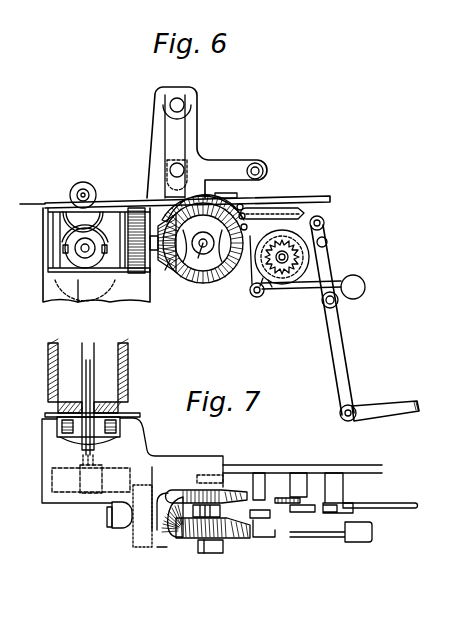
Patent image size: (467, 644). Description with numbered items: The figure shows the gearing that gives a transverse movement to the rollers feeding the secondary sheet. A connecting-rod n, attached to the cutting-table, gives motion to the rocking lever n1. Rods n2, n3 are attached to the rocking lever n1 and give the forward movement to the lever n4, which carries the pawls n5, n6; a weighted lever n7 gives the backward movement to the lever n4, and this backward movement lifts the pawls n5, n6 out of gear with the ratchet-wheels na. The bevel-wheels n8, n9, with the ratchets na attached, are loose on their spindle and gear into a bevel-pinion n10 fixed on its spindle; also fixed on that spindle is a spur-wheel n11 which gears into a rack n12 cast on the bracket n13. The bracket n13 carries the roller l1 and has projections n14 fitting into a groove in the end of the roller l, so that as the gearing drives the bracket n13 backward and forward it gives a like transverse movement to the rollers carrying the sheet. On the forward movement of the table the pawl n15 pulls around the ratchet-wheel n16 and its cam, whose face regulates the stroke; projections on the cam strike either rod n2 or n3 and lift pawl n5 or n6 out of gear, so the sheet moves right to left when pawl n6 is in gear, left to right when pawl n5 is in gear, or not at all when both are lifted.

In FIG. 6, the roller l is at (74, 290).
In FIG. 7, the roller l is at (92, 397).
In FIG. 6, the roller l1 is at (83, 192).
In FIG. 6, the connecting-rod n is at (397, 408).
In FIG. 7, the connecting-rod n is at (403, 508).
In FIG. 6, the rocking lever n1 is at (340, 362).
In FIG. 6, the rod n2 is at (268, 218).
In FIG. 6, the rod n3 is at (323, 220).
In FIG. 6, the lever n4 is at (250, 266).
In FIG. 7, the lever n4 is at (290, 507).
In FIG. 6, the pawl n5 is at (199, 194).
In FIG. 6, the pawl n6 is at (164, 240).
In FIG. 6, the weighted lever n7 is at (295, 290).
In FIG. 7, the weighted lever n7 is at (333, 537).
In FIG. 6, the bevel-wheel n8 is at (215, 278).
In FIG. 7, the bevel-wheel n8 is at (229, 488).
In FIG. 6, the bevel-wheel n9 is at (275, 287).
In FIG. 7, the bevel-wheel n9 is at (242, 540).
In FIG. 6, the bevel-pinion n10 is at (172, 266).
In FIG. 7, the bevel-pinion n10 is at (170, 540).
In FIG. 6, the spur-wheel n11 is at (134, 282).
In FIG. 7, the spur-wheel n11 is at (133, 545).
In FIG. 6, the rack n12 is at (138, 204).
In FIG. 6, the bracket n13 is at (148, 194).
In FIG. 7, the bracket n13 is at (132, 474).
In FIG. 7, the projections n14 is at (57, 426).
In FIG. 6, the pawl n15 is at (328, 242).
In FIG. 6, the ratchet-wheel n16 is at (322, 262).
In FIG. 7, the ratchet-wheel n16 is at (308, 487).
In FIG. 6, the ratchet-wheels na is at (197, 256).
In FIG. 7, the ratchet-wheels na is at (210, 540).